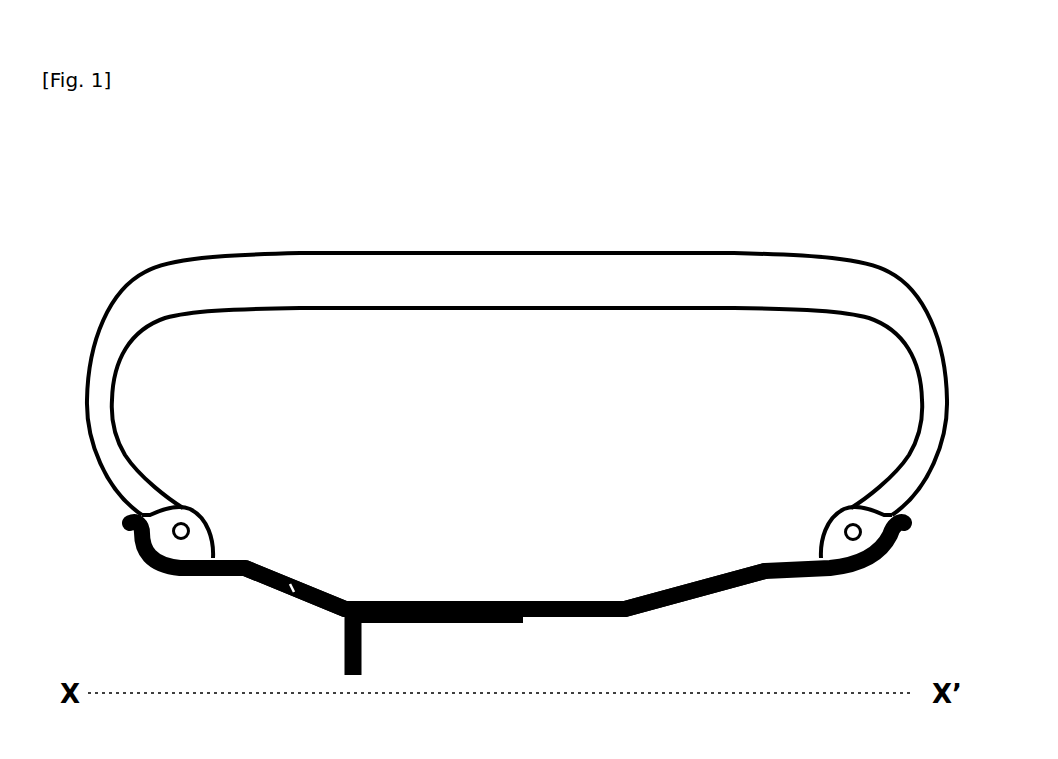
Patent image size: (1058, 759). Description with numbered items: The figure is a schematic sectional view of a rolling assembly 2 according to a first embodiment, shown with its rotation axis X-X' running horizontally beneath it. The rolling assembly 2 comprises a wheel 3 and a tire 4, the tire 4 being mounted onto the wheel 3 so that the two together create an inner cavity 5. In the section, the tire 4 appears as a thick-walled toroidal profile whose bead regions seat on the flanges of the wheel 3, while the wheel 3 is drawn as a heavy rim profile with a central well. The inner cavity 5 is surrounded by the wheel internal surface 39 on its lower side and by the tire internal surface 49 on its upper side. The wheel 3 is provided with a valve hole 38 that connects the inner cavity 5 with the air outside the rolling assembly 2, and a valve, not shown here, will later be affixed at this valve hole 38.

The rolling assembly 2 is at (517, 334).
The wheel 3 is at (517, 589).
The tire 4 is at (247, 283).
The tire internal surface 49 is at (582, 310).
The inner cavity 5 is at (526, 452).
The valve hole 38 is at (293, 583).
The wheel internal surface 39 is at (663, 592).